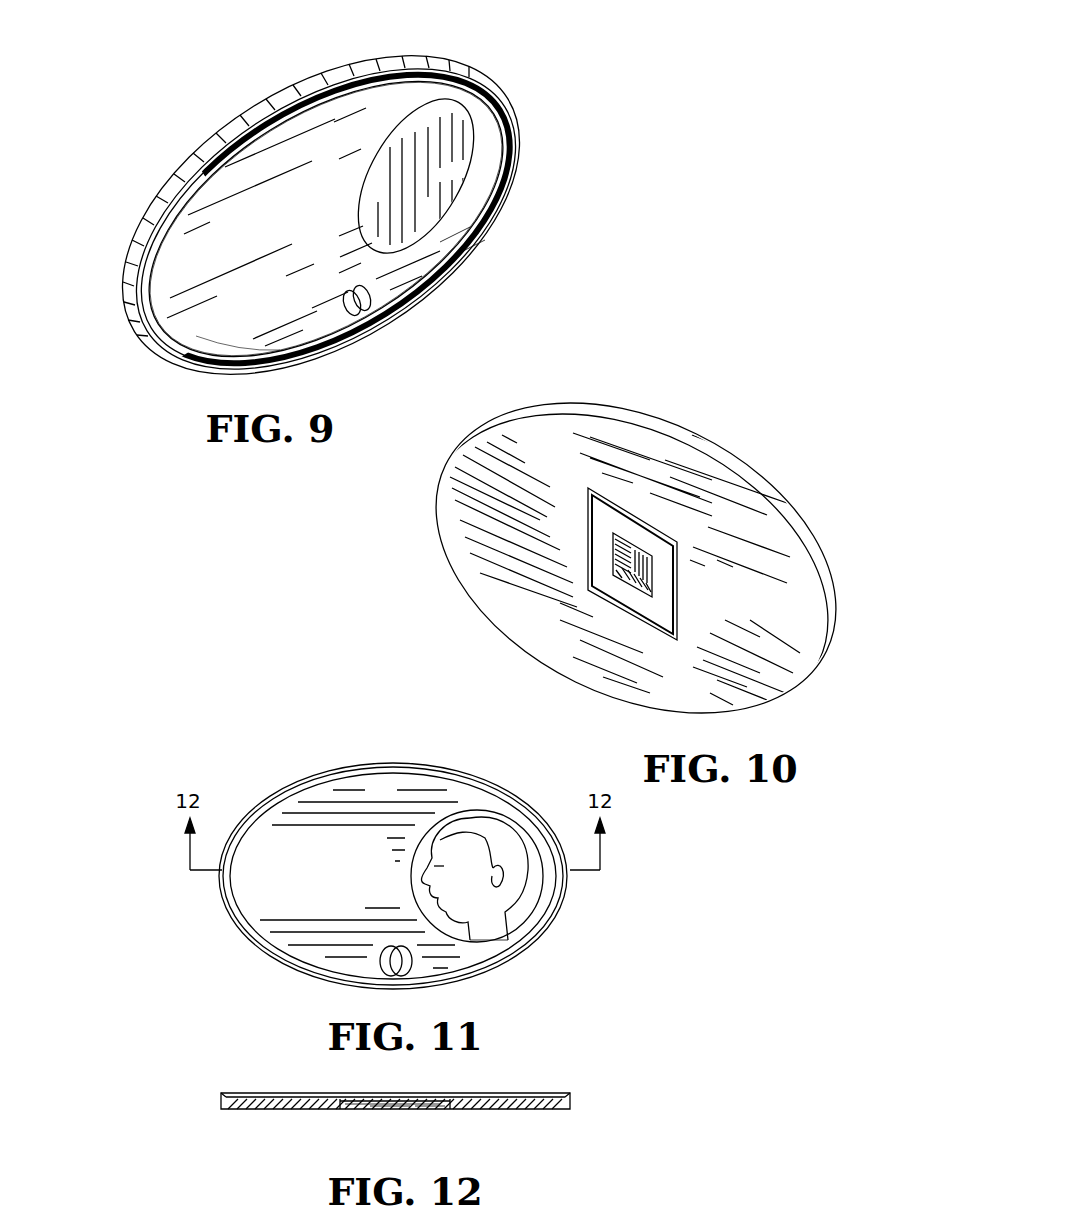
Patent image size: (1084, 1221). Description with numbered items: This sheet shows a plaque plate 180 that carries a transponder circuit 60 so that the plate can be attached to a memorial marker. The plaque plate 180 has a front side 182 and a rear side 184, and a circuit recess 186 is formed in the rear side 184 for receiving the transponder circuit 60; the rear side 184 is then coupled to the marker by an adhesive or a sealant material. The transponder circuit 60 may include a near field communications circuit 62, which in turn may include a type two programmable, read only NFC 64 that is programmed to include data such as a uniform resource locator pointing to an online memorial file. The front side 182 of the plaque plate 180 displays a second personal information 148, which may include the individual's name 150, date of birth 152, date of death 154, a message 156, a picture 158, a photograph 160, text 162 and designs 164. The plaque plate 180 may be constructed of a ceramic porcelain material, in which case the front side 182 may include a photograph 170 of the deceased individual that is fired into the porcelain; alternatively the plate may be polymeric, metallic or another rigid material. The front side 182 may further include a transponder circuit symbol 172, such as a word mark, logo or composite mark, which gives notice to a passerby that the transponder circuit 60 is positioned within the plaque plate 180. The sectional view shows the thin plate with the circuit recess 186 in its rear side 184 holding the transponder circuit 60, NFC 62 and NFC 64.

In FIG. 10, the transponder circuit 60 is at (632, 520).
In FIG. 12, the transponder circuit 60 is at (385, 1106).
In FIG. 10, the near field communications circuit 62 is at (650, 527).
In FIG. 12, the near field communications circuit 62 is at (362, 1106).
In FIG. 10, the type 2 programmable read only NFC 64 is at (670, 535).
In FIG. 12, the type 2 programmable read only NFC 64 is at (422, 1106).
In FIG. 9, the second personal information 148 is at (143, 293).
In FIG. 9, the individual's name 150 is at (175, 257).
In FIG. 11, the individual's name 150 is at (270, 842).
In FIG. 9, the date of birth 152 is at (200, 330).
In FIG. 11, the date of birth 152 is at (245, 896).
In FIG. 9, the date of death 154 is at (303, 302).
In FIG. 11, the date of death 154 is at (335, 905).
In FIG. 9, the message 156 is at (172, 200).
In FIG. 9, the picture 158 is at (405, 128).
In FIG. 11, the picture 158 is at (510, 830).
In FIG. 9, the photograph 160 is at (462, 140).
In FIG. 11, the photograph 160 is at (470, 822).
In FIG. 9, the text 162 is at (265, 215).
In FIG. 9, the designs 164 is at (447, 150).
In FIG. 9, the photograph of the deceased individual 170 is at (455, 182).
In FIG. 11, the photograph of the deceased individual 170 is at (508, 893).
In FIG. 9, the transponder circuit symbol 172 is at (372, 305).
In FIG. 11, the transponder circuit symbol 172 is at (378, 962).
In FIG. 9, the plaque plate 180 is at (500, 108).
In FIG. 10, the plaque plate 180 is at (587, 410).
In FIG. 11, the plaque plate 180 is at (532, 947).
In FIG. 12, the plaque plate 180 is at (572, 1100).
In FIG. 9, the front side 182 is at (472, 215).
In FIG. 11, the front side 182 is at (374, 788).
In FIG. 12, the front side 182 is at (266, 1097).
In FIG. 10, the rear side 184 is at (455, 497).
In FIG. 12, the rear side 184 is at (236, 1110).
In FIG. 10, the circuit recess 186 is at (590, 600).
In FIG. 12, the circuit recess 186 is at (455, 1099).